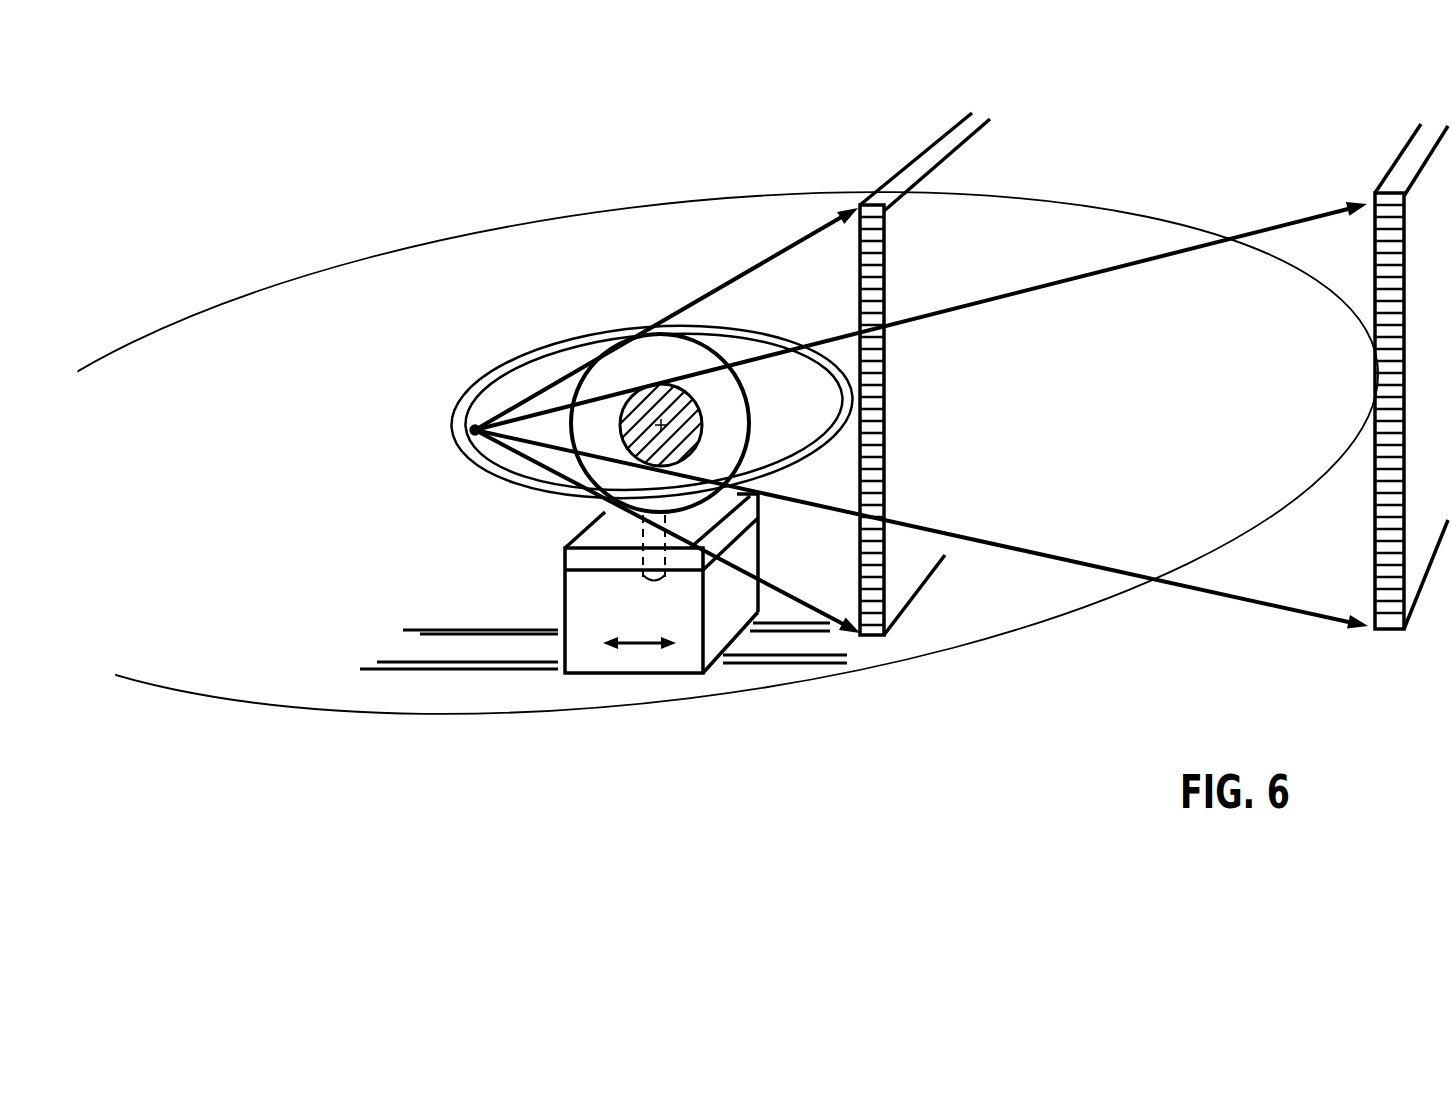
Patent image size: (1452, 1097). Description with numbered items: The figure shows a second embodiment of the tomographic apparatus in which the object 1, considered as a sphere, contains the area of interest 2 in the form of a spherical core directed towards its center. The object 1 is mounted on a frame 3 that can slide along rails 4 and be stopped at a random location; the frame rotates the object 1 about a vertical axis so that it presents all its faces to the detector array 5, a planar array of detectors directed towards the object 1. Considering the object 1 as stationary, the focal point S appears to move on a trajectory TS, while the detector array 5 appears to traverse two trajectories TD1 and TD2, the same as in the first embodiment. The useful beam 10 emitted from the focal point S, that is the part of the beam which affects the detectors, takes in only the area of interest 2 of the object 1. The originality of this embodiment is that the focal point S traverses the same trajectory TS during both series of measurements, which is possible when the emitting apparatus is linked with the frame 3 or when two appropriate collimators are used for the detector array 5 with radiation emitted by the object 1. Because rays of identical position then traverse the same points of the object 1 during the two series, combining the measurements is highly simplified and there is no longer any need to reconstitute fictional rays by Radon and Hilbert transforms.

The object 1 is at (737, 380).
The area of interest 2 is at (705, 438).
The frame 3 is at (612, 674).
The rails 4 is at (458, 630).
The detector array 5 is at (853, 240).
The useful beam 10 is at (729, 280).
The detector array trajectory TD1 is at (343, 263).
The detector array trajectory TD2 is at (467, 407).
The focal point trajectory TS is at (527, 372).
The focal point S is at (468, 462).